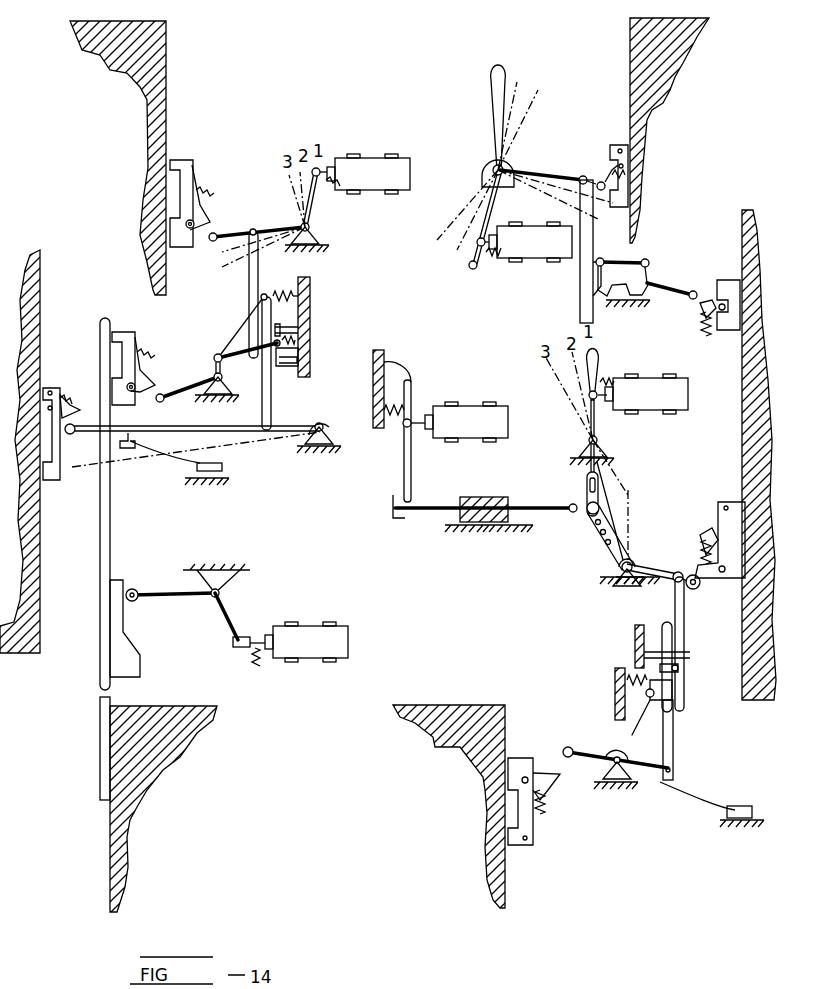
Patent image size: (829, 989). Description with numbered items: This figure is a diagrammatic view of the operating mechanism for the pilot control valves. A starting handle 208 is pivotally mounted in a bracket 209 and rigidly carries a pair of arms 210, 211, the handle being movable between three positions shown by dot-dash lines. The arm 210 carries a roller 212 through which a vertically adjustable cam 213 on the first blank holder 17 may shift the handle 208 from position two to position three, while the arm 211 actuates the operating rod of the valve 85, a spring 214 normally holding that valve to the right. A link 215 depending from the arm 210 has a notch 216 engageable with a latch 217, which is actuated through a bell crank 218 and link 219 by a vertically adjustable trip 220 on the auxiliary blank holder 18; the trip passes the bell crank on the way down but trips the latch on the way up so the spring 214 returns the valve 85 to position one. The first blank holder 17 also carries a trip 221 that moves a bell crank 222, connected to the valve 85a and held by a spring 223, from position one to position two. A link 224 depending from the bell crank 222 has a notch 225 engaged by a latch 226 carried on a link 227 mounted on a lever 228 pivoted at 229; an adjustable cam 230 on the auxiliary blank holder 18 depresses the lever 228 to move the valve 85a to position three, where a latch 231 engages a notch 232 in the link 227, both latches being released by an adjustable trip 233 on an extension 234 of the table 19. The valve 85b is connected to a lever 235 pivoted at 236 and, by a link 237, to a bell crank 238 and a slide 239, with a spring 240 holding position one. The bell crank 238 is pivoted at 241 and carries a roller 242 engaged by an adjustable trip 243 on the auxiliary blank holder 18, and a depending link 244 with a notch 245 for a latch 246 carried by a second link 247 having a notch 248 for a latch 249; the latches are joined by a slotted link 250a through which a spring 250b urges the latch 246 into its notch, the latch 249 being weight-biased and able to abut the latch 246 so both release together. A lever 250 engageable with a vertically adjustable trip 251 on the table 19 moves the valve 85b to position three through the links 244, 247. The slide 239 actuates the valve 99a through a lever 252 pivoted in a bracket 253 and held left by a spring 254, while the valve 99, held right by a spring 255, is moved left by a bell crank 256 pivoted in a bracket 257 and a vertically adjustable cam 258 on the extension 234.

The first blank holder 17 is at (163, 44).
The auxiliary blank holder 18 is at (40, 262).
The table 19 is at (195, 745).
The valve 85 is at (540, 247).
The valve 85a is at (355, 165).
The valve 85b is at (648, 385).
The valve 99 is at (300, 636).
The valve 99a is at (465, 402).
The starting handle 208 is at (490, 84).
The bracket 209 is at (492, 167).
The arm 210 is at (540, 172).
The arm 211 is at (485, 210).
The roller 212 is at (605, 178).
The vertically adjustable cam 213 is at (632, 152).
The spring 214 is at (478, 268).
The link 215 is at (593, 242).
The notch 216 is at (592, 266).
The latch 217 is at (603, 300).
The bell crank 218 is at (668, 288).
The link 219 is at (630, 262).
The vertically adjustable trip 220 is at (718, 286).
The vertically adjustable trip 221 is at (203, 233).
The bell crank 222 is at (270, 225).
The spring 223 is at (326, 196).
The link 224 is at (249, 285).
The notch 225 is at (238, 320).
The latch 226 is at (270, 296).
The link 227 is at (271, 394).
The lever 228 is at (215, 445).
The pivot 229 is at (323, 423).
The adjustable cam 230 is at (58, 395).
The latch 231 is at (300, 355).
The notch 232 is at (268, 358).
The adjustable trip 233 is at (147, 394).
The extension 234 is at (103, 321).
The lever 235 is at (598, 352).
The pivot 236 is at (600, 440).
The link 237 is at (590, 516).
The bell crank 238 is at (620, 557).
The slide 239 is at (440, 512).
The spring 240 is at (613, 388).
The pivot 241 is at (632, 562).
The roller 242 is at (696, 590).
The adjustable trip 243 is at (730, 523).
The depending link 244 is at (675, 612).
The notch 245 is at (686, 673).
The latch 246 is at (646, 672).
The second link 247 is at (673, 740).
The notch 248 is at (675, 692).
The latch 249 is at (630, 708).
The lever 250 is at (612, 756).
The slotted link 250a is at (680, 668).
The spring 250b is at (625, 690).
The vertically adjustable trip 251 is at (555, 782).
The lever 252 is at (415, 401).
The bracket 253 is at (395, 376).
The spring 254 is at (397, 413).
The spring 255 is at (258, 660).
The bell crank 256 is at (235, 616).
The bracket 257 is at (228, 580).
The vertically adjustable cam 258 is at (130, 663).